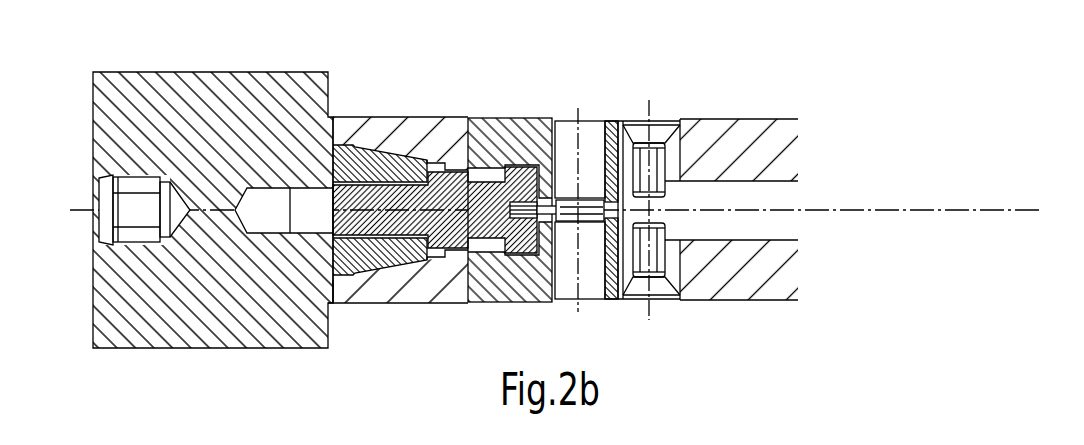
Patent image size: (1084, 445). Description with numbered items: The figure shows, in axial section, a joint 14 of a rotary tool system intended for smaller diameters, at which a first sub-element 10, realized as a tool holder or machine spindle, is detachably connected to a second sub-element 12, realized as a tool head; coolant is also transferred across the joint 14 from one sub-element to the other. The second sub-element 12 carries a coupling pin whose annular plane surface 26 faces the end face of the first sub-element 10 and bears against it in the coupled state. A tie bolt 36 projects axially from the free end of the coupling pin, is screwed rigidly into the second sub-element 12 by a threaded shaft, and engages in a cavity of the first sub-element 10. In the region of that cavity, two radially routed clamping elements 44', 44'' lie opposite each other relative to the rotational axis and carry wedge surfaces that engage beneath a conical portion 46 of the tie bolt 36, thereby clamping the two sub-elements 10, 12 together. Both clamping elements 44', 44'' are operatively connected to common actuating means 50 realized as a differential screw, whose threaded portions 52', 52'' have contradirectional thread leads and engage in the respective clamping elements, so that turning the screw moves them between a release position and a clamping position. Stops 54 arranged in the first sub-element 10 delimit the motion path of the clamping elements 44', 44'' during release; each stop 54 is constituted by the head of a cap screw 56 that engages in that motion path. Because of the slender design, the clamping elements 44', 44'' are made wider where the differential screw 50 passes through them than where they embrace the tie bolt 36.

The first sub-element 10 is at (722, 255).
The second sub-element 12 is at (219, 323).
The joint 14 is at (369, 133).
The annular plane surface 26 is at (335, 288).
The tie bolt 36 is at (524, 162).
The clamping element 44' is at (430, 101).
The clamping element 44'' is at (419, 297).
The conical portion 46 is at (505, 166).
The actuating means 50 is at (591, 288).
The threaded portion 52' is at (594, 108).
The threaded portion 52'' is at (617, 290).
The stop 54 is at (622, 302).
The cap screw 56 is at (653, 285).